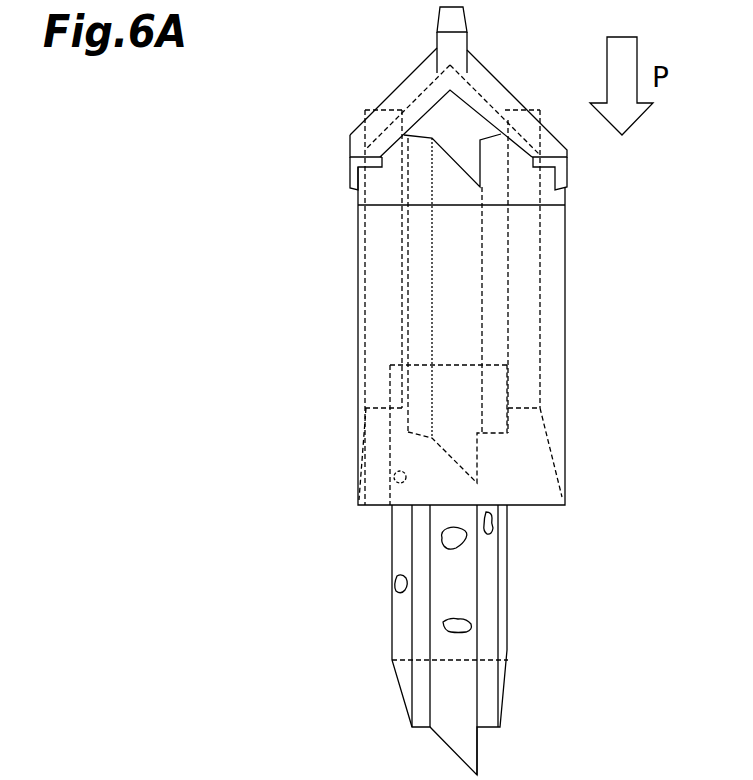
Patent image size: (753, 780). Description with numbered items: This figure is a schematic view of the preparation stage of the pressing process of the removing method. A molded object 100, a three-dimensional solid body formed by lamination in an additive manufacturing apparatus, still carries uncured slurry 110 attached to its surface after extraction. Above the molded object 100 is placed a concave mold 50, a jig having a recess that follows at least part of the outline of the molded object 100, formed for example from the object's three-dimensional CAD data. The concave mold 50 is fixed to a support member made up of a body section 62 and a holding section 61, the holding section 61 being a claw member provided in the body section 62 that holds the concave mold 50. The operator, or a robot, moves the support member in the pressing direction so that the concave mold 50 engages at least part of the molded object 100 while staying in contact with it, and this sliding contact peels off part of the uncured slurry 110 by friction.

The concave mold 50 is at (553, 397).
The holding section 61 is at (348, 182).
The body section 62 is at (458, 42).
The molded object 100 is at (492, 637).
The uncured slurry 110 is at (396, 484).